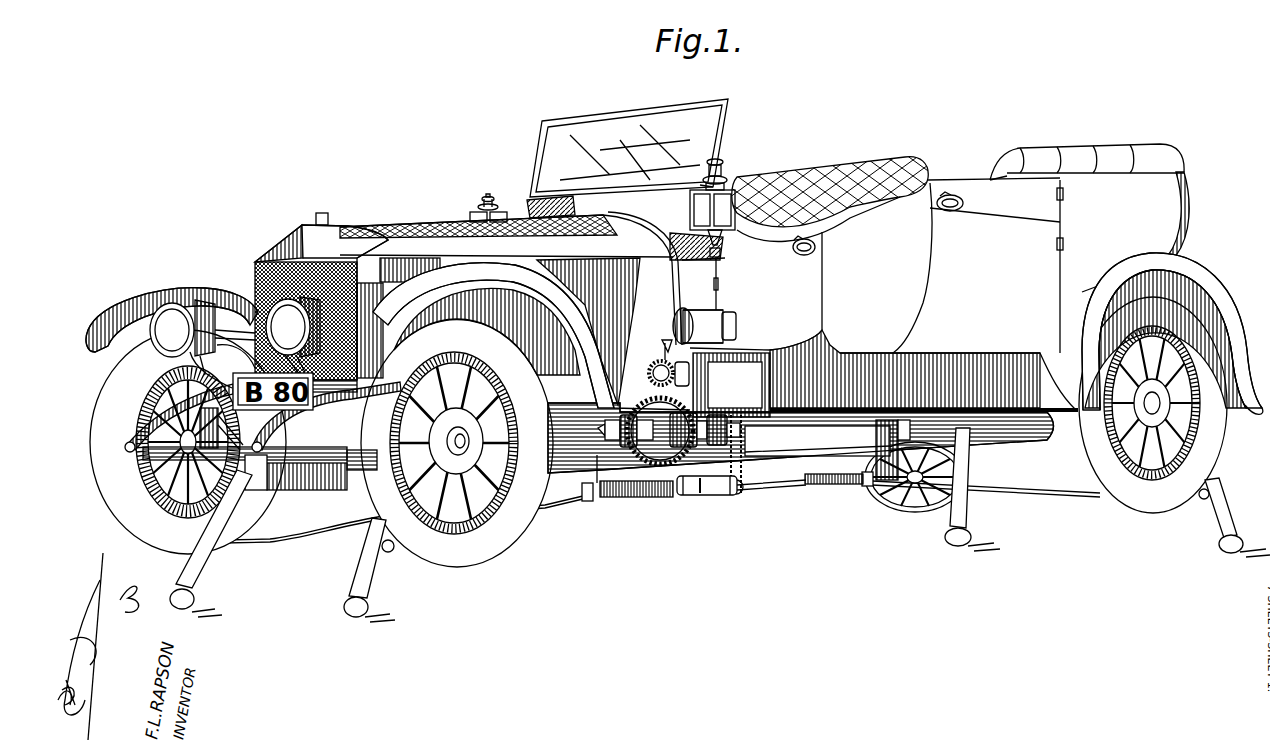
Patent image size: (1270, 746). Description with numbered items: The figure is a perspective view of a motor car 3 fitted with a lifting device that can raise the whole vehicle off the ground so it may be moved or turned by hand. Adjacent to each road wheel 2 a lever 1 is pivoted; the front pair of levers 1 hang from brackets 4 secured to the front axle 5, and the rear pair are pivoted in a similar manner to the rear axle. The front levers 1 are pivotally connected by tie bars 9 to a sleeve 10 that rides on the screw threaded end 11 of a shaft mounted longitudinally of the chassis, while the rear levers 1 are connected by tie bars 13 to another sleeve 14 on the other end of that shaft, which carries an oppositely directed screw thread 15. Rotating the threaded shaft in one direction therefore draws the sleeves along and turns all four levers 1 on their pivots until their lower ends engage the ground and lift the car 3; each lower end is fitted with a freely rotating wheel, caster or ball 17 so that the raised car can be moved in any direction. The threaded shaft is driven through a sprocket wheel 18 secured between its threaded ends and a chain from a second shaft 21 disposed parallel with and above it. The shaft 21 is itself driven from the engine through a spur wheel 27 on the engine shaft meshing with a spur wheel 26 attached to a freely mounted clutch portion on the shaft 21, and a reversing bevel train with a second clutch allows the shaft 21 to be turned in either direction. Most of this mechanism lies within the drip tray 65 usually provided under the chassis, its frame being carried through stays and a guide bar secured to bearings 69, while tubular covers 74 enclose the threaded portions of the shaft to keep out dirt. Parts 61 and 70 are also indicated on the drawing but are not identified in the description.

The lever 1 is at (193, 587).
The wheel 2 is at (970, 468).
The motor car 3 is at (935, 277).
The bracket 4 is at (231, 477).
The front axle 5 is at (317, 481).
The tie bar 9 is at (321, 528).
The sleeve 10 is at (674, 497).
The screw threaded end 11 is at (637, 498).
The tie bar 13 is at (1056, 494).
The sleeve 14 is at (792, 491).
The screw thread 15 is at (848, 487).
The wheel, caster or ball 17 is at (178, 610).
The sprocket wheel 18 is at (734, 498).
The shaft 21 is at (597, 429).
The spur wheel 26 is at (646, 412).
The spur wheel 27 is at (655, 362).
The motor 61 is at (664, 338).
The drip tray 65 is at (801, 438).
The bearing 69 is at (588, 502).
The bracket 70 is at (876, 430).
The tubular cover 74 is at (710, 497).